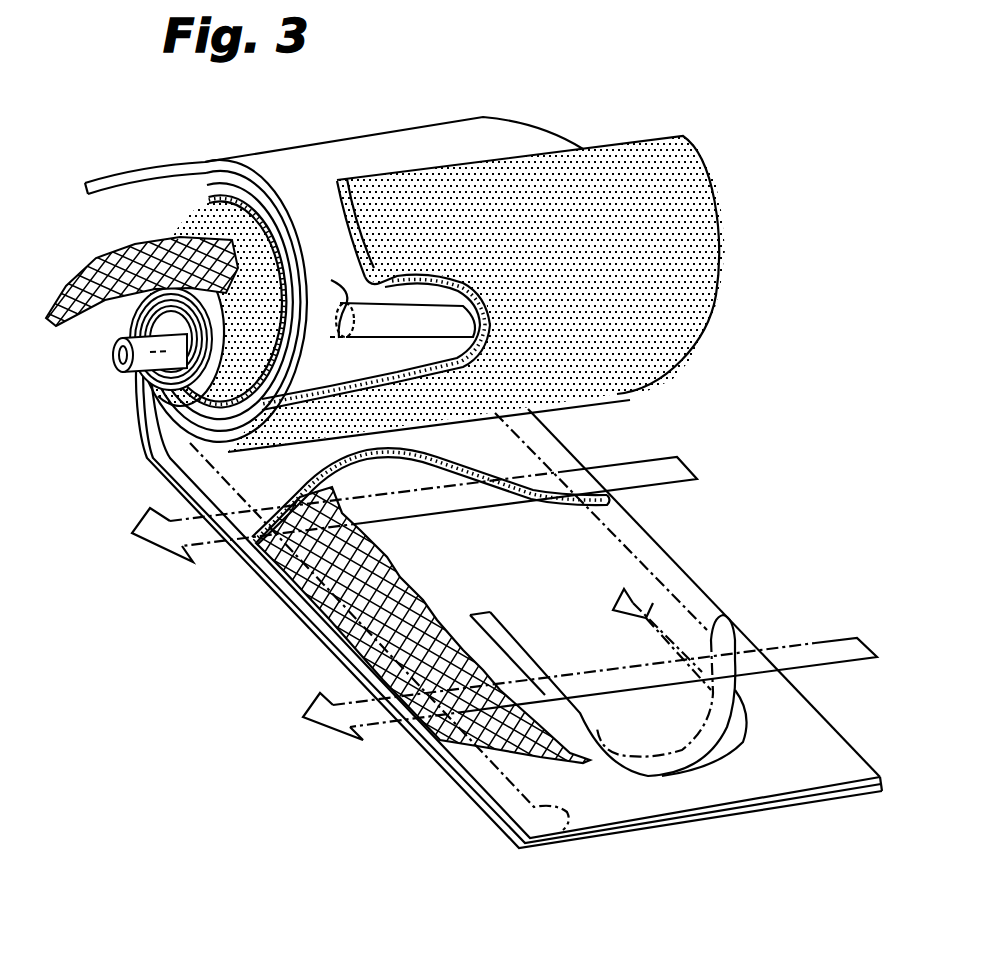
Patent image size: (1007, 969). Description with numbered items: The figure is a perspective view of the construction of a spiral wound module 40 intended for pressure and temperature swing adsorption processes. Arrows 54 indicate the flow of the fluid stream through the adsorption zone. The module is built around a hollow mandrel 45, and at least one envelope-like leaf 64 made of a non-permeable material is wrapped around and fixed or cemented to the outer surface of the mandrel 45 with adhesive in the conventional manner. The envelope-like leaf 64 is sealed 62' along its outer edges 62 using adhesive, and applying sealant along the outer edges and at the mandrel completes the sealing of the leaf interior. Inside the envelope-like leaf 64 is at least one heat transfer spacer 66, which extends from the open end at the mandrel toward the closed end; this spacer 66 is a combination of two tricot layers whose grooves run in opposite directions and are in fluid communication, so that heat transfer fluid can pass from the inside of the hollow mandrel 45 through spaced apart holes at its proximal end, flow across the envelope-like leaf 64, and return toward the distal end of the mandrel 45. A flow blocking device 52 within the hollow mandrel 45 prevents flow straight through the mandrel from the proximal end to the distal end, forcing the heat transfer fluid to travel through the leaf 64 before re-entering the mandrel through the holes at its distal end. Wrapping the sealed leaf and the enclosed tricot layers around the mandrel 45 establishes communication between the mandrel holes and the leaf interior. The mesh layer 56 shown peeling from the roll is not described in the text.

The spiral wound module 40 is at (652, 136).
The mandrel 45 is at (120, 374).
The flow blocking device 52 is at (350, 290).
The arrows 54 is at (650, 455).
The mesh layer 56 is at (93, 298).
The outer edges 62 is at (583, 620).
The seal 62' is at (437, 661).
The envelope-like leaf 64 is at (294, 157).
The heat transfer spacer 66 is at (324, 591).